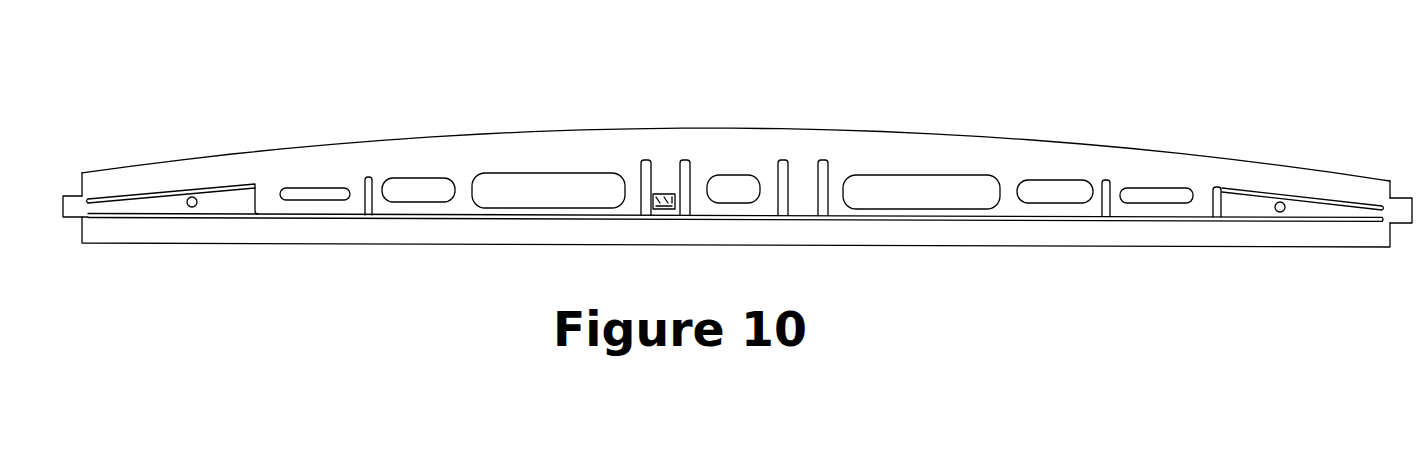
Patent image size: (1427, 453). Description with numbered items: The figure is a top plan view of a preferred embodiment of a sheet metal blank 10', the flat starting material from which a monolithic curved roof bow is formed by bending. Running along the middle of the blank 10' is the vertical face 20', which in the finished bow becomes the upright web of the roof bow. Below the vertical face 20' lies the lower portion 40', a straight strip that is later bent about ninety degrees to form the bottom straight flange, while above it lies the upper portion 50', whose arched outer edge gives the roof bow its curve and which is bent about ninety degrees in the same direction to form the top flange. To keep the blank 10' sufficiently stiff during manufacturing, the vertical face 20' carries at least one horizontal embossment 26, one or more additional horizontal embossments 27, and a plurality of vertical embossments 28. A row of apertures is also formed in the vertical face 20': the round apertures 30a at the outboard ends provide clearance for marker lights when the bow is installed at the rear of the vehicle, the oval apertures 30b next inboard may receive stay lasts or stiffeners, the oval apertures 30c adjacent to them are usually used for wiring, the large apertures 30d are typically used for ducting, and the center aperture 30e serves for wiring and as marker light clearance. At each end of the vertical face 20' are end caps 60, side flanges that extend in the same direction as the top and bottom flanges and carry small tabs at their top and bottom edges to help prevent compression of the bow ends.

The sheet metal blank 10' is at (736, 134).
The vertical face 20' is at (531, 239).
The horizontal embossment 26 is at (317, 213).
The additional horizontal embossment 27 is at (197, 200).
The vertical embossment 28 is at (644, 178).
The round aperture 30a is at (1283, 200).
The oval aperture 30b is at (1163, 191).
The oval aperture 30c is at (1062, 186).
The large aperture 30d is at (915, 182).
The center aperture 30e is at (736, 181).
The lower portion 40' is at (735, 263).
The upper portion 50' is at (736, 112).
The end cap 60 is at (70, 208).